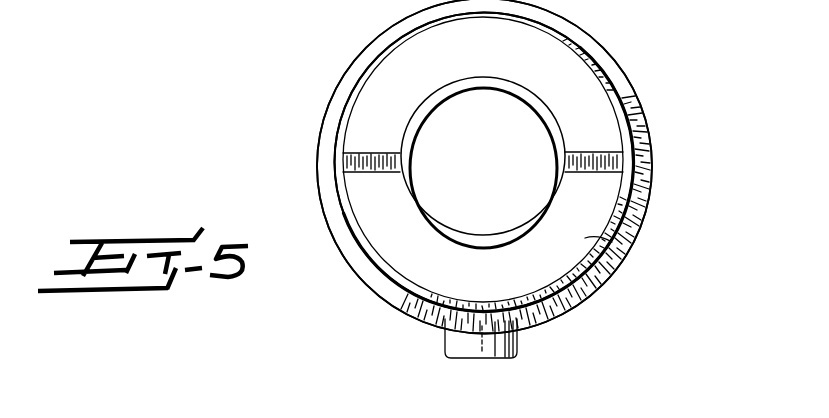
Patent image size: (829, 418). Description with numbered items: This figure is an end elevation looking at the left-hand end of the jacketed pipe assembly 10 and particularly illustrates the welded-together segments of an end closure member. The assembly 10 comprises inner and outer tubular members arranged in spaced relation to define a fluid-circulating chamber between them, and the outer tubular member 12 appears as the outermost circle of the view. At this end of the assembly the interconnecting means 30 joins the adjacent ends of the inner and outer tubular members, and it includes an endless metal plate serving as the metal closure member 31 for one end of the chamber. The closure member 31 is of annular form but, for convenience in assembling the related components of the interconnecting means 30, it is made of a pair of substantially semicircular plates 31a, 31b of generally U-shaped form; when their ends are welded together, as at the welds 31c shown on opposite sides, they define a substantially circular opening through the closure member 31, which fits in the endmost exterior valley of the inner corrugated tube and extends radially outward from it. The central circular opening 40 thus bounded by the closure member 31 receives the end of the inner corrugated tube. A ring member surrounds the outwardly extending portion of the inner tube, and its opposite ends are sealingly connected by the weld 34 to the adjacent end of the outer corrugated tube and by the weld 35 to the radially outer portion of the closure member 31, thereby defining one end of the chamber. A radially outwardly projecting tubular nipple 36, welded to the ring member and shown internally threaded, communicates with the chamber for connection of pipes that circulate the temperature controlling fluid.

The jacketed pipe assembly 10 is at (708, 157).
The outer tubular member 12 is at (300, 99).
The interconnecting means 30 is at (565, 306).
The metal closure member 31 is at (622, 250).
The semicircular plate 31a is at (501, 290).
The semicircular plate 31b is at (540, 67).
The weld 31c is at (389, 175).
The weld 34 is at (648, 202).
The weld 35 is at (626, 107).
The tubular nipple 36 is at (477, 352).
The hub 40 is at (468, 86).